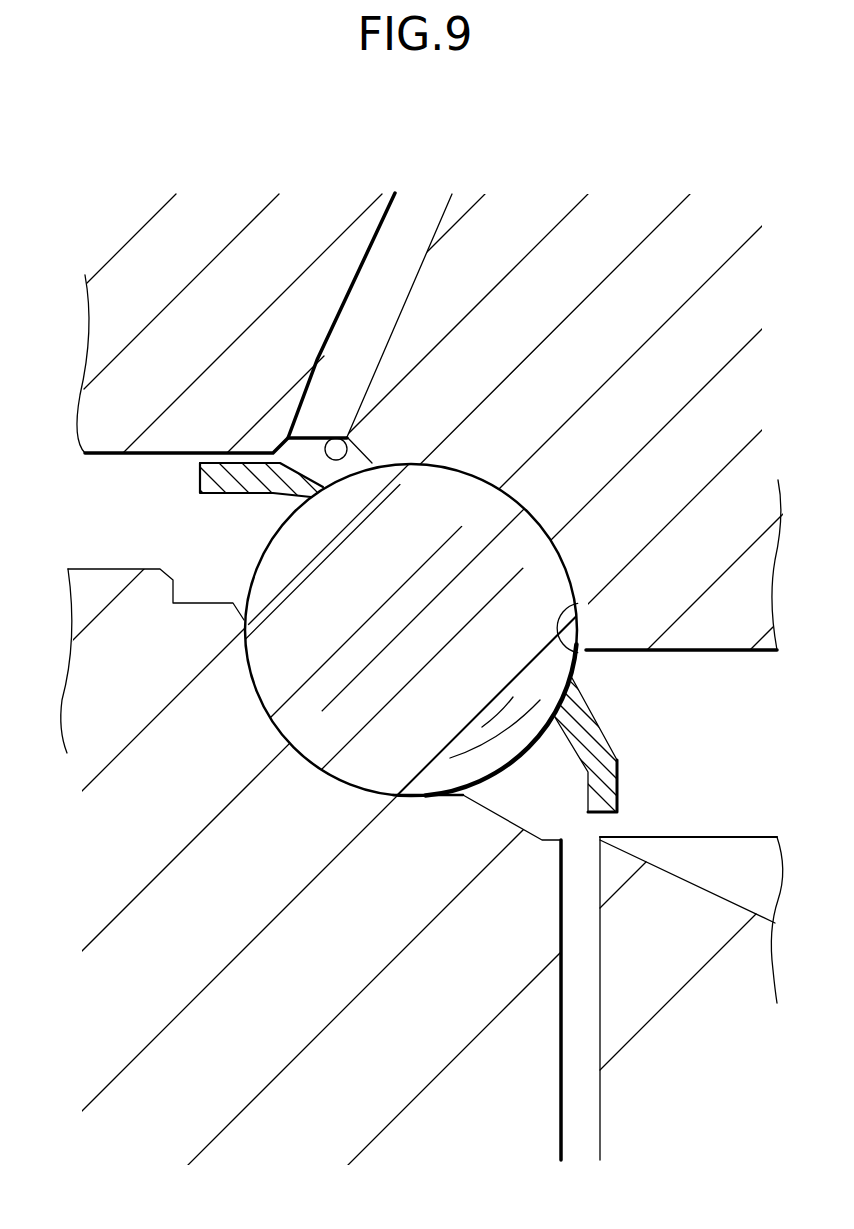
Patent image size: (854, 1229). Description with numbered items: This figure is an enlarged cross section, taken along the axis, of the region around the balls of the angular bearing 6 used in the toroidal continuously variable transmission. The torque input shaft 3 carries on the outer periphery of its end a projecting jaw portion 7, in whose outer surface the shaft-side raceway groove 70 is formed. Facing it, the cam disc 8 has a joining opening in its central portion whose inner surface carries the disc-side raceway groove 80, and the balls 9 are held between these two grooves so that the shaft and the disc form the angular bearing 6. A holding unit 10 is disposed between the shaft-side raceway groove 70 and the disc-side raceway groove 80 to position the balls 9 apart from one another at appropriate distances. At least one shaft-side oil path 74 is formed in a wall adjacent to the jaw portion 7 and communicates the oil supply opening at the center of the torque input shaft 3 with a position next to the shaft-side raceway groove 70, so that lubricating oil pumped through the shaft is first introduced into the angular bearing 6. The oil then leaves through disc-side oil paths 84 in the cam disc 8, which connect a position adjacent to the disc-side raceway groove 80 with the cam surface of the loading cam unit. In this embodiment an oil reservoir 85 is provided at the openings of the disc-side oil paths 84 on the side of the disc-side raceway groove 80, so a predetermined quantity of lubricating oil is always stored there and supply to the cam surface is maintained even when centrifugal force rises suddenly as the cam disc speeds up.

The torque input shaft 3 is at (724, 837).
The angular bearing 6 is at (152, 511).
The jaw portion 7 is at (123, 569).
The cam disc 8 is at (133, 455).
The balls 9 is at (268, 543).
The holding unit 10 is at (618, 753).
The shaft-side raceway groove 70 is at (334, 777).
The shaft-side oil path 74 is at (580, 838).
The disc-side raceway groove 80 is at (578, 657).
The disc-side oil path 84 is at (358, 440).
The oil reservoir 85 is at (270, 452).